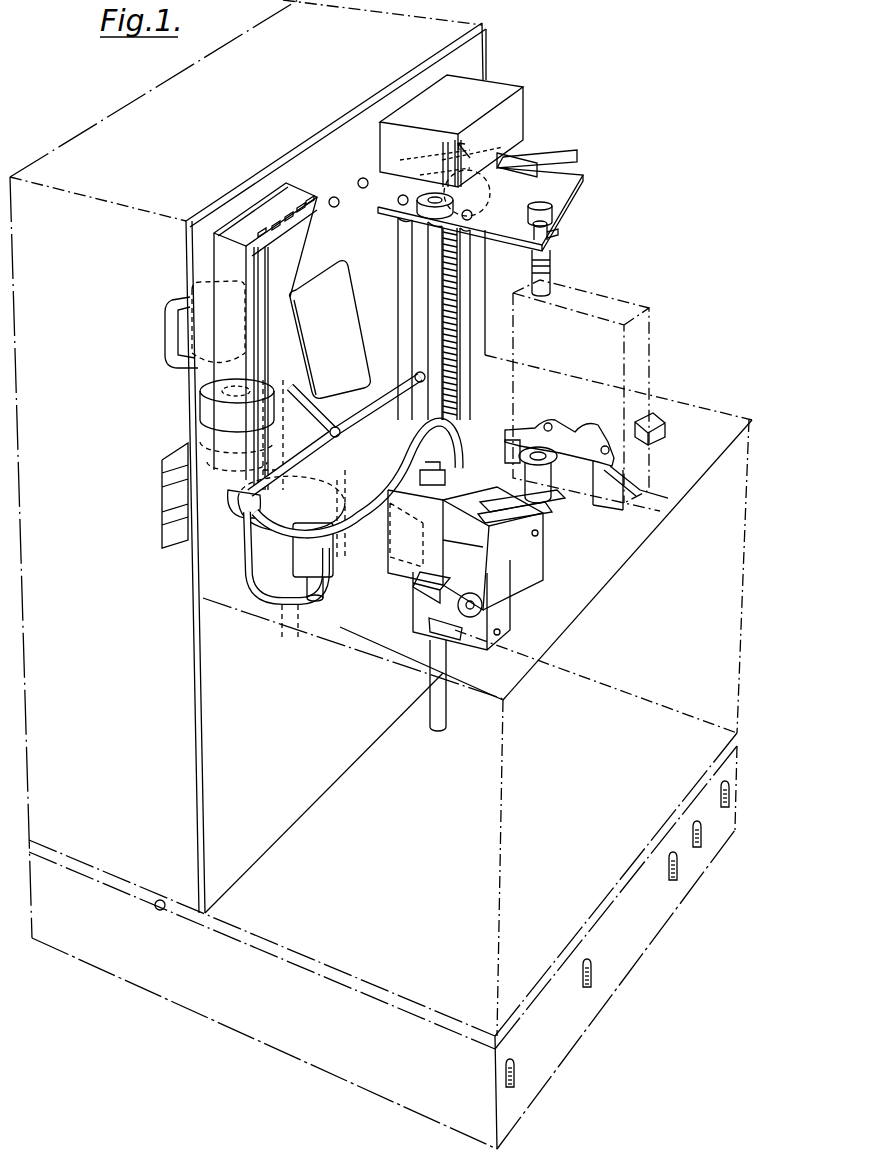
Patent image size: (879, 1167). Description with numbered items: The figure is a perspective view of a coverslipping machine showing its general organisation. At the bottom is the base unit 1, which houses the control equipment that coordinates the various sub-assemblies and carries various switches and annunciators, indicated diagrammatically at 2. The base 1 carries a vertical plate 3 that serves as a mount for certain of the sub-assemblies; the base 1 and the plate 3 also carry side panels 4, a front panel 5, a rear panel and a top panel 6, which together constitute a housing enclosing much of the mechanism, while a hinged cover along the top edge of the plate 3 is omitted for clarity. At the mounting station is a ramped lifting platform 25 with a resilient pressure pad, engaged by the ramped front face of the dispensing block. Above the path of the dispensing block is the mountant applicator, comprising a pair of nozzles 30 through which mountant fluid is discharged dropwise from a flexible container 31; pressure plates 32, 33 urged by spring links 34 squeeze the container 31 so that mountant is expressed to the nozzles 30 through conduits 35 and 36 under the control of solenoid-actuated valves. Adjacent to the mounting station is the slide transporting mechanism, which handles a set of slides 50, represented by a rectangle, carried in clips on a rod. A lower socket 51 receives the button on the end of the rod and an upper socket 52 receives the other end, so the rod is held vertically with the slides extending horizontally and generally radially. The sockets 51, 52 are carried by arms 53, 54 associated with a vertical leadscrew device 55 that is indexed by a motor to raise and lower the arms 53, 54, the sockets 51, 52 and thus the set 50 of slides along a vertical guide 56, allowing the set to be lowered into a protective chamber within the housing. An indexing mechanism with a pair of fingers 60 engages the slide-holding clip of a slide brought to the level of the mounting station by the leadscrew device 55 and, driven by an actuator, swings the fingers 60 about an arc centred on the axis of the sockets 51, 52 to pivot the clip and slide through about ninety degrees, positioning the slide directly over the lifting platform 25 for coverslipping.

The base unit 1 is at (268, 1021).
The switches and annunciators 2 is at (725, 808).
The vertical plate 3 is at (256, 762).
The side panels 4 is at (119, 682).
The front panel 5 is at (733, 467).
The top panel 6 is at (264, 118).
The lifting platform 25 is at (513, 541).
The nozzles 30 is at (470, 442).
The flexible container 31 is at (265, 351).
The pressure plate 32 is at (323, 211).
The pressure plate 33 is at (235, 260).
The spring links 34 is at (233, 487).
The conduit 35 is at (267, 583).
The conduit 36 is at (347, 580).
The set of slides 50 is at (648, 328).
The lower socket 51 is at (552, 447).
The upper socket 52 is at (548, 281).
The arm 53 is at (547, 508).
The arm 54 is at (560, 181).
The vertical leadscrew device 55 is at (443, 253).
The vertical guide 56 is at (433, 283).
The fingers 60 is at (580, 433).